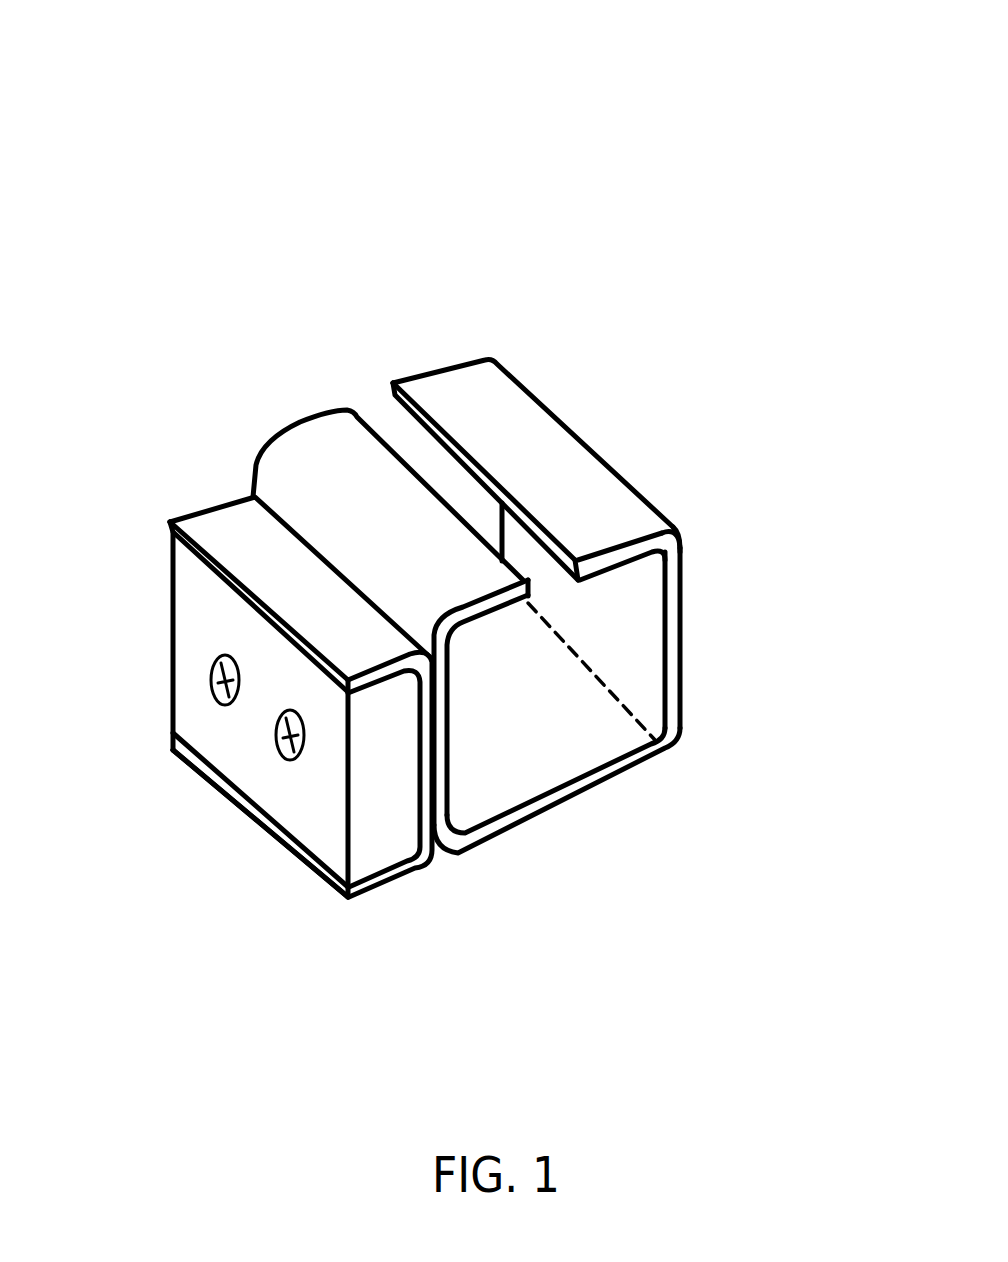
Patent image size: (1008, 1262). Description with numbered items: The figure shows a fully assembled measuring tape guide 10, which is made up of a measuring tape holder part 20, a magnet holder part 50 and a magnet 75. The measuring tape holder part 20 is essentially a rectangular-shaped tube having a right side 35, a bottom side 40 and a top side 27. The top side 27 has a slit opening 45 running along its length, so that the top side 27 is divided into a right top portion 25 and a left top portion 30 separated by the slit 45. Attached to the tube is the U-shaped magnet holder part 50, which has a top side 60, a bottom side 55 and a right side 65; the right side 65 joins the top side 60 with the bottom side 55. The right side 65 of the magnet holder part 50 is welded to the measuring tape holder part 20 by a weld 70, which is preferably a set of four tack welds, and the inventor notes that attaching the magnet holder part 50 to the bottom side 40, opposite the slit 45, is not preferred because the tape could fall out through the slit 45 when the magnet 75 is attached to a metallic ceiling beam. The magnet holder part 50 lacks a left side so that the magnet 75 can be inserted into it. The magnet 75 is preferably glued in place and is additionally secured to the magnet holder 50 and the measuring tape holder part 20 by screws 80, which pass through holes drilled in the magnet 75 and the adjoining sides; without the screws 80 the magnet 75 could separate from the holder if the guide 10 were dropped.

The measuring tape guide 10 is at (570, 293).
The measuring tape holder part 20 is at (587, 465).
The right top portion 25 is at (495, 402).
The top side 27 is at (433, 268).
The left top portion 30 is at (347, 467).
The right side 35 is at (623, 650).
The bottom side 40 is at (558, 718).
The slit opening 45 is at (570, 548).
The magnet holder part 50 is at (207, 520).
The bottom side 55 is at (370, 895).
The top side 60 is at (263, 520).
The right side 65 is at (432, 835).
The weld 70 is at (433, 787).
The magnet 75 is at (280, 800).
The screws 80 is at (210, 682).